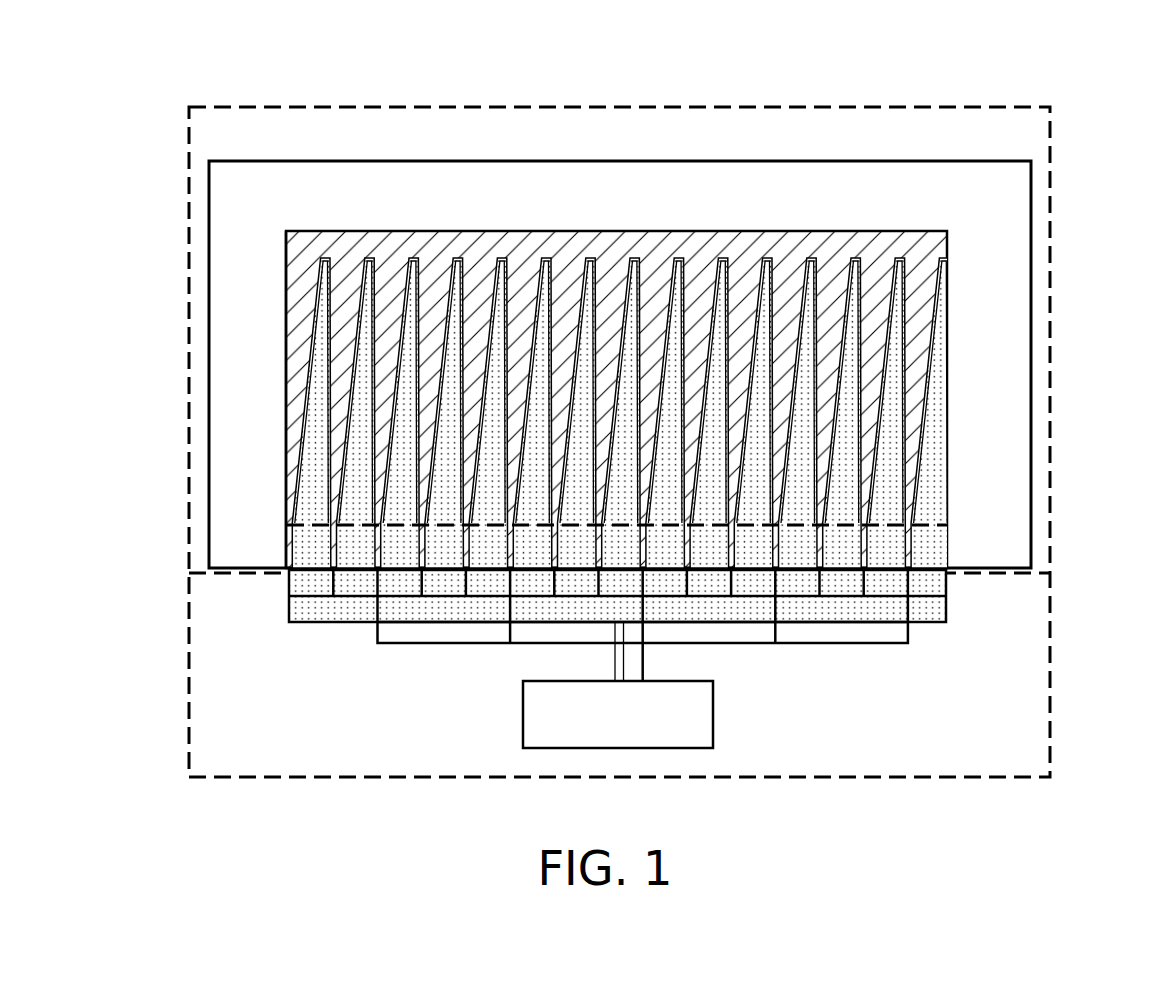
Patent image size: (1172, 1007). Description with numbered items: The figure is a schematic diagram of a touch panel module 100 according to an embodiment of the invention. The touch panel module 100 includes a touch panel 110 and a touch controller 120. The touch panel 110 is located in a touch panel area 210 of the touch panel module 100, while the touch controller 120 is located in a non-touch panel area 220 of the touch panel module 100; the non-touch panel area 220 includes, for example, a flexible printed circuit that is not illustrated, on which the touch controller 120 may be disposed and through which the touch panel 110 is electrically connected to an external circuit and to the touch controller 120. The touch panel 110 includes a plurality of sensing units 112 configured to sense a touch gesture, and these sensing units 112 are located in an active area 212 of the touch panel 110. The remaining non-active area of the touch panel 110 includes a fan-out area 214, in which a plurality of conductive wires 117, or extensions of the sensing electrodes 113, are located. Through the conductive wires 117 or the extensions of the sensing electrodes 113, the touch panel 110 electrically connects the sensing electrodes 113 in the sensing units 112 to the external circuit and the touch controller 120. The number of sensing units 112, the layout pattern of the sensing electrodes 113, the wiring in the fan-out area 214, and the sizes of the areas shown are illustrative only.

The touch panel module 100 is at (674, 462).
The touch panel 110 is at (1031, 407).
The sensing units 112 is at (947, 334).
The sensing electrodes 113 is at (800, 487).
The conductive wires 117 is at (910, 540).
The touch controller 120 is at (713, 716).
The touch panel area 210 is at (1050, 262).
The active area 212 is at (287, 415).
The fan-out area 214 is at (287, 553).
The non-touch panel area 220 is at (1050, 687).